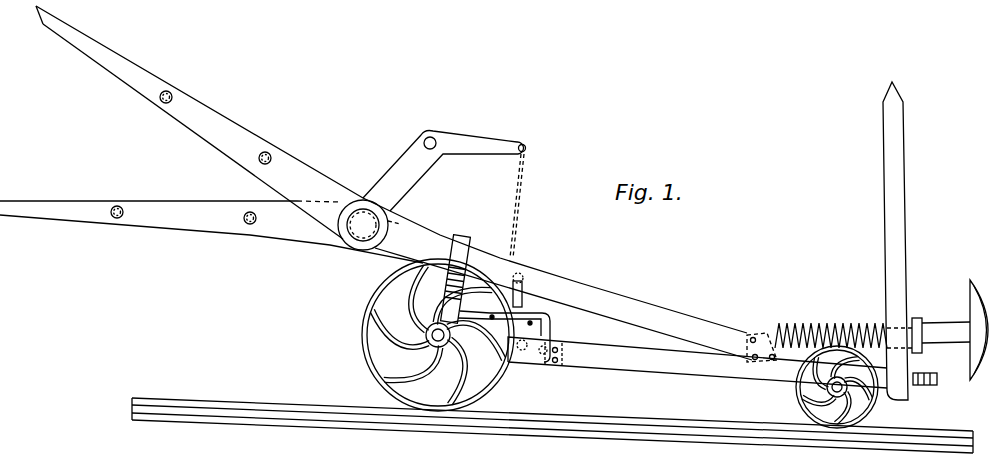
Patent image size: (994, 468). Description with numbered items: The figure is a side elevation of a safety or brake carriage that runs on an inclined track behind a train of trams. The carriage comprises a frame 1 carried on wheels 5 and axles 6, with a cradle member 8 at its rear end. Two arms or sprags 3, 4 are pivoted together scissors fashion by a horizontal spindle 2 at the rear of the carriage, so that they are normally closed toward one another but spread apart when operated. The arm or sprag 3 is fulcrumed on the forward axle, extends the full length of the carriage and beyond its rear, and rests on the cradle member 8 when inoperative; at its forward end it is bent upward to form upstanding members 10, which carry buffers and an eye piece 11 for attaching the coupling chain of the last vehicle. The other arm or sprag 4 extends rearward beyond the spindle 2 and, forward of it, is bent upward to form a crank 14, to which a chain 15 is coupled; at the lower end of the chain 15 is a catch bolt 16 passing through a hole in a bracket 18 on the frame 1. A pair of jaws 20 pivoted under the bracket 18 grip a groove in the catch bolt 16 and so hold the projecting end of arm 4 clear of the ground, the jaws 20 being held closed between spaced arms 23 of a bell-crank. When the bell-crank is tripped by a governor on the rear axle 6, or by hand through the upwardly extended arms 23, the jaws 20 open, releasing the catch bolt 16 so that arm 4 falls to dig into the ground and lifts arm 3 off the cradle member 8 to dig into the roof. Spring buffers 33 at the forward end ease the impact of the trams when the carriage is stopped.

The frame 1 is at (666, 372).
The horizontal spindle 2 is at (360, 227).
The arm or sprag 3 is at (232, 129).
The arm or sprag 4 is at (160, 206).
The wheels 5 is at (360, 335).
The axles 6 is at (436, 333).
The cradle member 8 is at (460, 244).
The upstanding members 10 is at (897, 222).
The eye piece 11 is at (938, 380).
The crank 14 is at (465, 142).
The chain 15 is at (514, 221).
The catch bolt 16 is at (471, 305).
The bracket 18 is at (553, 328).
The jaws 20 is at (530, 311).
The spaced arms 23 is at (519, 300).
The spring buffers 33 is at (970, 300).